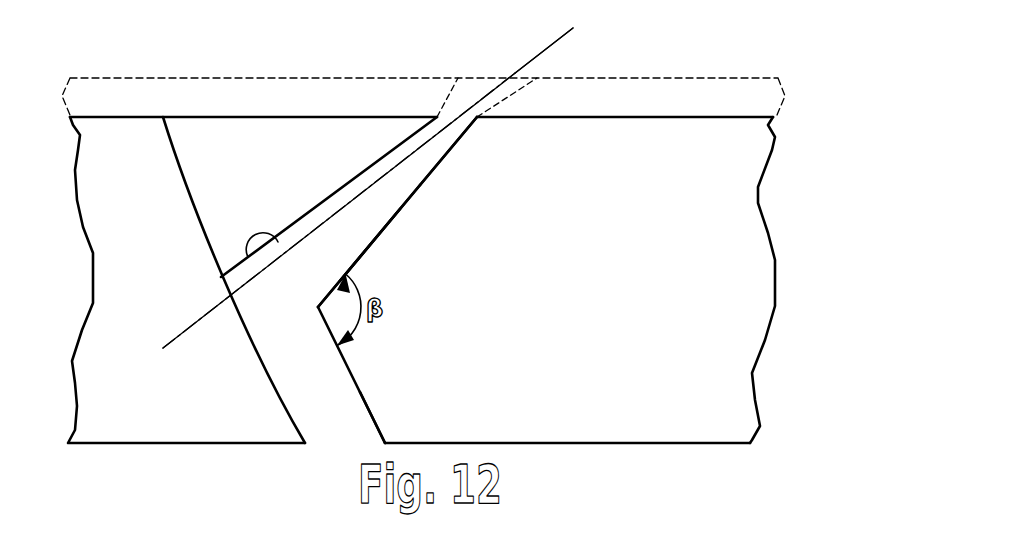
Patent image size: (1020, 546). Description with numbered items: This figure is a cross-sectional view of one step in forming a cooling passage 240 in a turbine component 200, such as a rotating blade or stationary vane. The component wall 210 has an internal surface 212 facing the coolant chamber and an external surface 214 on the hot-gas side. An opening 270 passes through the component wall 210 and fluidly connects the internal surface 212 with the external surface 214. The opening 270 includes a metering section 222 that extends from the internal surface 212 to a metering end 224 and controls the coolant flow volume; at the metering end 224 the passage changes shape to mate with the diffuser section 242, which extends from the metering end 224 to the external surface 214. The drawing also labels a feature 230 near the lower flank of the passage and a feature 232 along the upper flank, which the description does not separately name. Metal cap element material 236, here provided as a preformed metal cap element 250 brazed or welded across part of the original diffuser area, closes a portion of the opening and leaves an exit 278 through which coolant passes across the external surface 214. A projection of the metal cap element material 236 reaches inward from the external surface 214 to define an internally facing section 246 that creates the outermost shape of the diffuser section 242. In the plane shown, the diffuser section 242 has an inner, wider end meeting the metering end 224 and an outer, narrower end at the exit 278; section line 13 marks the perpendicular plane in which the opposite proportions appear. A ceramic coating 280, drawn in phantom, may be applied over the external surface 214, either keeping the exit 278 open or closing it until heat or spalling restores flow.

The section line 13- 13 is at (573, 28).
The turbine component 200 is at (161, 112).
The component wall 210 is at (708, 373).
The internal surface 212 is at (593, 443).
The external surface 214 is at (667, 117).
The metering section 222 is at (344, 365).
The metering end 224 is at (277, 297).
The heel 230 is at (372, 410).
The groove flank upper portion 232 is at (442, 157).
The metal cap element material 236 is at (268, 143).
The cooling passage 240 is at (368, 248).
The diffuser section 242 is at (381, 205).
The internally facing section 246 is at (248, 257).
The preformed metal cap element 250 is at (213, 118).
The opening 270 is at (370, 245).
The exit 278 is at (449, 121).
The ceramic coating 280 is at (380, 80).